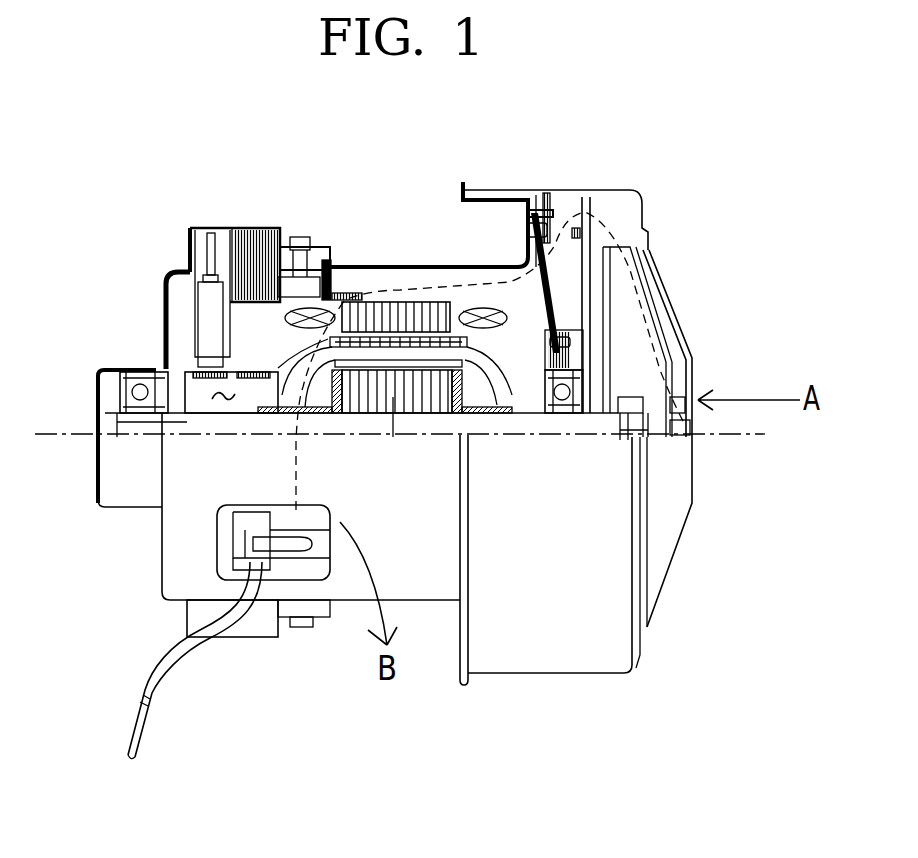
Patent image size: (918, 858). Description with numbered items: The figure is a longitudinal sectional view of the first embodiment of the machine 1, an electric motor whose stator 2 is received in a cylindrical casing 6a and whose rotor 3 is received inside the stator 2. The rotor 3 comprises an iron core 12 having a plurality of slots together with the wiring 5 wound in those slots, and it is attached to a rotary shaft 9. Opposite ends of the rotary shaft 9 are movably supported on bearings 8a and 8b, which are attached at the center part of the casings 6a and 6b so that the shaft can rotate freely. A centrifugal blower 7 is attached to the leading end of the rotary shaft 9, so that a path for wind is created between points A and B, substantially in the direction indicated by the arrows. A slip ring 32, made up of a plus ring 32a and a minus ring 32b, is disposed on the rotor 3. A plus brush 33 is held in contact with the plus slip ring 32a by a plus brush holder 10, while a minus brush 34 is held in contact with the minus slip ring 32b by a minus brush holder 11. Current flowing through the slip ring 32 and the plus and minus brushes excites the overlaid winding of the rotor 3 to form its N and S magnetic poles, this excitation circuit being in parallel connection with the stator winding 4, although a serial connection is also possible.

The electric motor 1 is at (570, 697).
The stator 2 is at (400, 342).
The rotor 3 is at (393, 347).
The stator winding 4 is at (487, 313).
The wiring 5 is at (427, 345).
The cylindrical casing 6a is at (477, 265).
The casing 6b is at (563, 215).
The centrifugal blower 7 is at (647, 293).
The bearing 8a is at (140, 377).
The bearing 8b is at (555, 376).
The rotary shaft 9 is at (597, 422).
The plus brush holder 10 is at (254, 228).
The minus brush holder 11 is at (243, 631).
The iron core 12 is at (393, 437).
The slip ring 32 is at (215, 390).
The plus slip ring 32a is at (195, 377).
The minus slip ring 32b is at (254, 377).
The plus brush 33 is at (210, 325).
The minus brush 34 is at (250, 512).